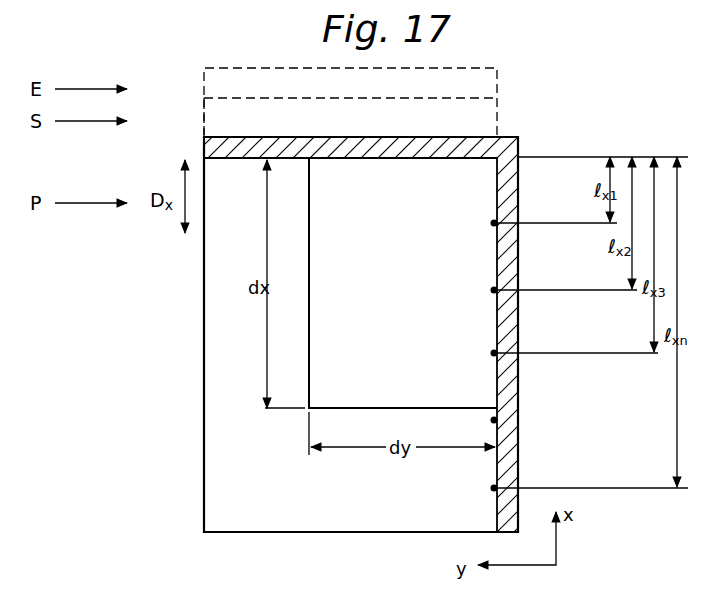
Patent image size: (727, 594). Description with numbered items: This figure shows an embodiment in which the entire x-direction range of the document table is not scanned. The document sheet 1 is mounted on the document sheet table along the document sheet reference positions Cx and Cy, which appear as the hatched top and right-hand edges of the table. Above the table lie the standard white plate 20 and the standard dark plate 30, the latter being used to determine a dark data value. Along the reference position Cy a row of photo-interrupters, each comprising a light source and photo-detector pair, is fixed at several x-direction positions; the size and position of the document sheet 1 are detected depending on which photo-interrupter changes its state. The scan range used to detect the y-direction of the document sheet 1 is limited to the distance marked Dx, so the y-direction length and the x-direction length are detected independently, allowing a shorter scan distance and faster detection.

The document sheet 1 is at (477, 175).
The standard white plate 20 is at (215, 117).
The standard dark plate 30 is at (215, 80).
The document sheet reference position Cx is at (457, 144).
The document sheet reference position Cy is at (500, 268).